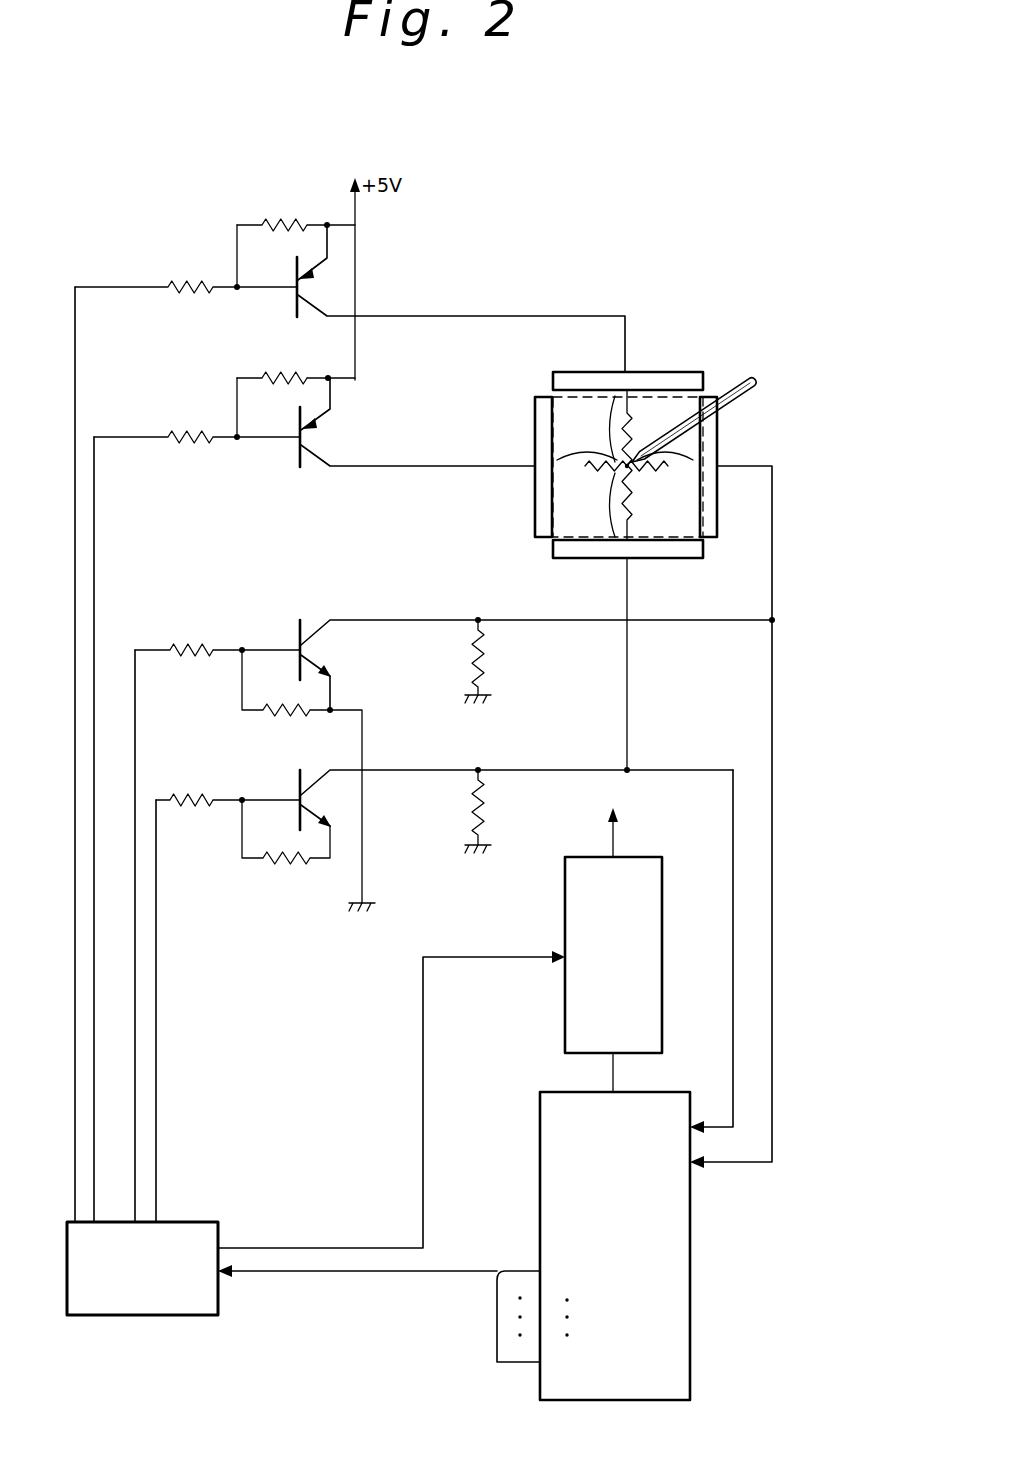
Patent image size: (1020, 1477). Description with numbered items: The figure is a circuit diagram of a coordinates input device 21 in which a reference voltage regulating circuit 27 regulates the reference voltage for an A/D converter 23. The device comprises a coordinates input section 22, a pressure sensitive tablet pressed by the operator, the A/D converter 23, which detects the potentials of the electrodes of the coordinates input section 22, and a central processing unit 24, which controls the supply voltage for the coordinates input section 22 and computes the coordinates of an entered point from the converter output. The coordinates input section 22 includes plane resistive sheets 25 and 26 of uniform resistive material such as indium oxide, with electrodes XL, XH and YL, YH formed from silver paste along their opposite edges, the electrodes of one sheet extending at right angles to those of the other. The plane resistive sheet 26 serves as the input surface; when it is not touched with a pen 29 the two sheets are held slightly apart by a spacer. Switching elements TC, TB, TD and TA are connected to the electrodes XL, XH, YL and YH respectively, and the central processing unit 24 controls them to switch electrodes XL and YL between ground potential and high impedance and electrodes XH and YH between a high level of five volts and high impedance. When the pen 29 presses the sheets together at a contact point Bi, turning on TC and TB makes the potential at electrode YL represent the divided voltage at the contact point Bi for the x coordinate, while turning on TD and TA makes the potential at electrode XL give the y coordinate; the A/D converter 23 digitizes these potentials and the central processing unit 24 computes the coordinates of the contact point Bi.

The coordinates input device 21 is at (350, 1334).
The coordinates input section 22 is at (626, 713).
The A/D converter 23 is at (678, 1343).
The central processing unit 24 is at (193, 1232).
The plane resistive sheet 25 is at (574, 419).
The plane resistive sheet 26 is at (560, 521).
The reference voltage regulating circuit 27 is at (565, 1007).
The pen 29 is at (756, 386).
The switching element TA is at (296, 306).
The switching element TB is at (298, 459).
The switching element TC is at (298, 630).
The switching element TD is at (298, 784).
The electrode XH is at (542, 434).
The electrode XL is at (709, 444).
The electrode YH is at (642, 380).
The electrode YL is at (642, 552).
The contact point Bi is at (632, 470).